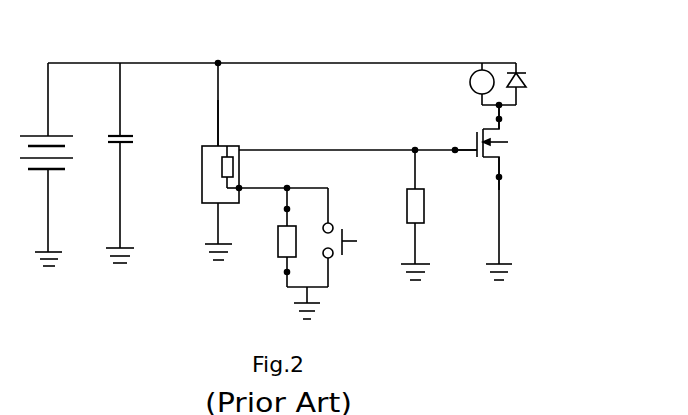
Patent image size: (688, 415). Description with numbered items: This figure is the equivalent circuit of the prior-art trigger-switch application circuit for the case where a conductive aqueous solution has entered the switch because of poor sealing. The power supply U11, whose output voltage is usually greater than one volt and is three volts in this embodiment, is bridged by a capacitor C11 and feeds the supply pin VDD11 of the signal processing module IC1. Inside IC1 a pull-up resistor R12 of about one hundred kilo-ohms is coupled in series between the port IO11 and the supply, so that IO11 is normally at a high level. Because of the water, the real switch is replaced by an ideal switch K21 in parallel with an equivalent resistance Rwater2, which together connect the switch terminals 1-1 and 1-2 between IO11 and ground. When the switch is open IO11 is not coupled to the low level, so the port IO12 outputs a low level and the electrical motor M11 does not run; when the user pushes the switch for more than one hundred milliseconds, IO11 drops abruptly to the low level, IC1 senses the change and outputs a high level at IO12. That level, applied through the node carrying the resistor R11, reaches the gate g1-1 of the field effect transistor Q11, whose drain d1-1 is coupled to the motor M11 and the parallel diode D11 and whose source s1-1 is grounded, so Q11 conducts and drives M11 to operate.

The output voltage of the power supply U11 is at (59, 164).
The capacitor C11 is at (131, 163).
The signal processing module IC1 is at (202, 190).
The pull-up resistor R12 is at (222, 173).
The power supply voltage VDD11 is at (238, 123).
The output port IO12 is at (358, 141).
The input port IO11 is at (283, 179).
The switch terminal 1-1 is at (272, 207).
The switch terminal 1-2 is at (272, 272).
The equivalent resistance Rwater2 is at (262, 241).
The ideal switch K21 is at (352, 237).
The resistor R11 is at (425, 215).
The field effect transistor Q11 is at (515, 192).
The gate g1-1 is at (458, 162).
The drain d1-1 is at (513, 118).
The source s1-1 is at (513, 173).
The electrical motor M11 is at (476, 85).
The diode D11 is at (531, 84).